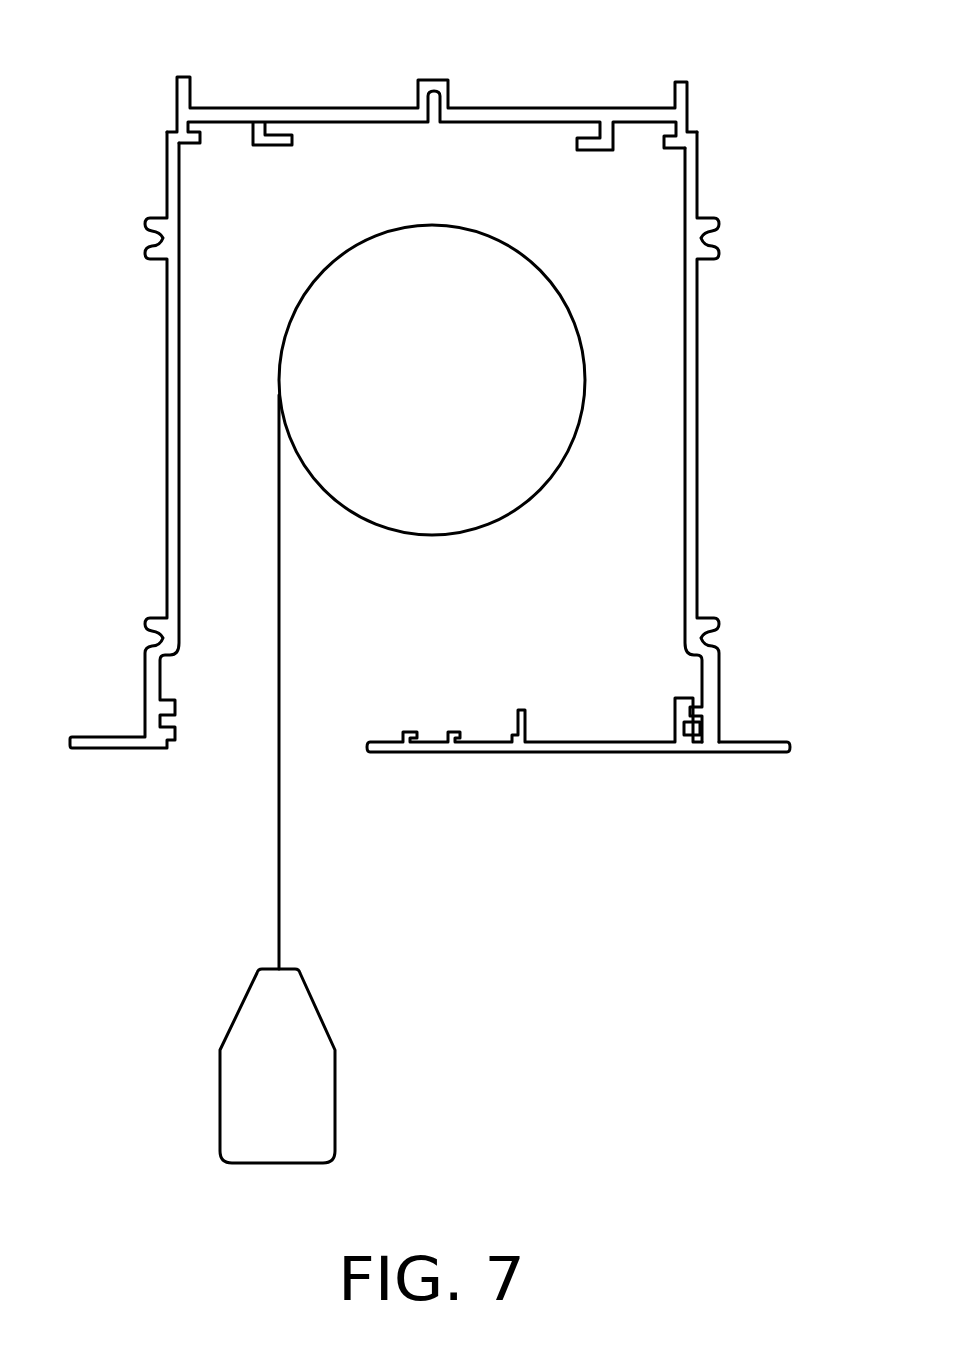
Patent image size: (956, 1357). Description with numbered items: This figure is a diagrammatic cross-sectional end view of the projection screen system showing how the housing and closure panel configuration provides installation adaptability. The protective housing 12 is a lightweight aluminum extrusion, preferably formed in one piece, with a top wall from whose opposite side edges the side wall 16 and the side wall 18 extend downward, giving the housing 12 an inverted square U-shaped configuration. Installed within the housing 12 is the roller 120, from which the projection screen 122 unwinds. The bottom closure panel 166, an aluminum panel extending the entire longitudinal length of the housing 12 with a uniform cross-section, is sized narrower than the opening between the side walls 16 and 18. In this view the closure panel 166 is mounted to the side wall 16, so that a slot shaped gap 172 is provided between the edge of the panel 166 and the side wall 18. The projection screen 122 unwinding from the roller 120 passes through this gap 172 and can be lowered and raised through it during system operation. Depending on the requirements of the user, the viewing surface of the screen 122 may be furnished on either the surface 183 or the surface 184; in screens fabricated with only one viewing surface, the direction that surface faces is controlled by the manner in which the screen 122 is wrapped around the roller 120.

The protective housing 12 is at (562, 108).
The side wall 16 is at (697, 472).
The side wall 18 is at (172, 412).
The roller 120 is at (530, 370).
The projection screen 122 is at (277, 755).
The bottom closure panel 166 is at (610, 757).
The slot shaped gap 172 is at (326, 748).
The surface 183 is at (264, 871).
The surface 184 is at (290, 871).